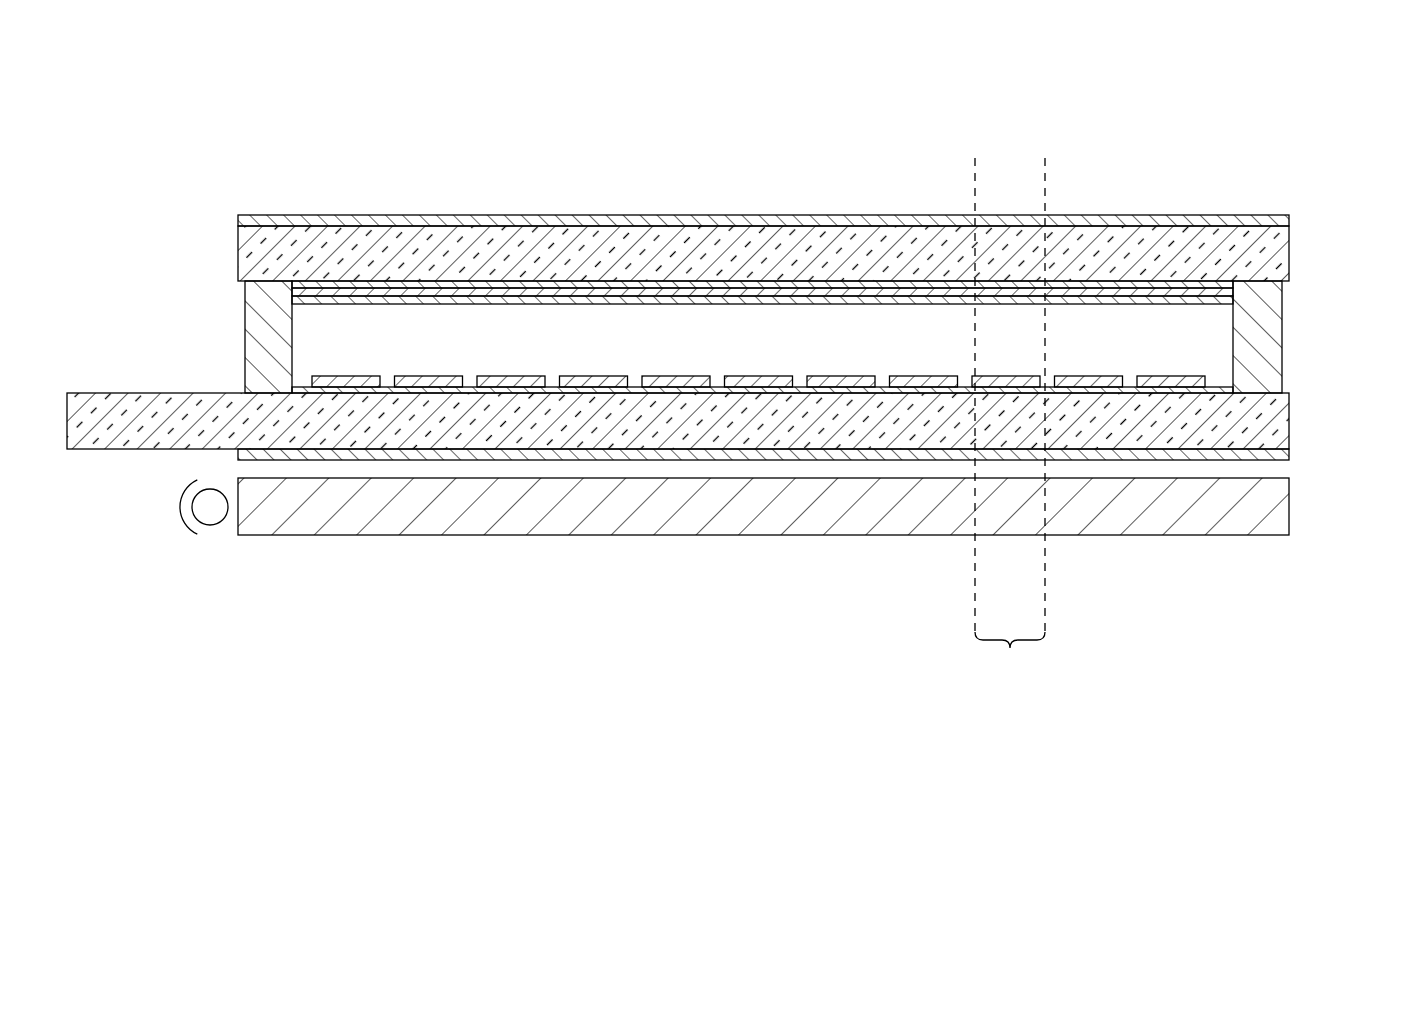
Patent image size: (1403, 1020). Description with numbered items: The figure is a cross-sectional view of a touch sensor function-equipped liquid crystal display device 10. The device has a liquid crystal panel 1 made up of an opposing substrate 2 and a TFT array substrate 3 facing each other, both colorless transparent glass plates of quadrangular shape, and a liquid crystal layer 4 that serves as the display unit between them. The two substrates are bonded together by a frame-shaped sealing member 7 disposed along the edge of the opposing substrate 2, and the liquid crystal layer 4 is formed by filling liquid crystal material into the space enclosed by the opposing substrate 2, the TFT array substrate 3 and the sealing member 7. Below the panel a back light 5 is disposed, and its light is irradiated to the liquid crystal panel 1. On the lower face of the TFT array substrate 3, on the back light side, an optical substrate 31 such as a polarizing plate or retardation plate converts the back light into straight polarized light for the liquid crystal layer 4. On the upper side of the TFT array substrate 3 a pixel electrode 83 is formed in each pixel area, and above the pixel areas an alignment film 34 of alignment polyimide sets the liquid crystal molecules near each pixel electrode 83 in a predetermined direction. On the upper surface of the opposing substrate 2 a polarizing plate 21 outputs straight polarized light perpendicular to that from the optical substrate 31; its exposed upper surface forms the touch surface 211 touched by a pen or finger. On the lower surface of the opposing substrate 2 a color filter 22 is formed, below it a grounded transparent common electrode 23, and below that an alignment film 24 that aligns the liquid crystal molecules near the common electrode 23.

The liquid crystal display device 10 is at (1289, 170).
The liquid crystal panel 1 is at (1340, 217).
The opposing substrate 2 is at (1276, 244).
The polarizing plate 21 is at (880, 218).
The touch surface 211 is at (1132, 216).
The color filter 22 is at (462, 290).
The common electrode 23 is at (649, 297).
The alignment film 24 is at (351, 294).
The TFT array substrate 3 is at (1280, 421).
The optical substrate 31 is at (762, 456).
The alignment film 34 is at (595, 391).
The pixel electrode 83 is at (430, 392).
The liquid crystal layer 4 is at (1207, 333).
The sealing member 7 is at (256, 325).
The back light 5 is at (1278, 503).